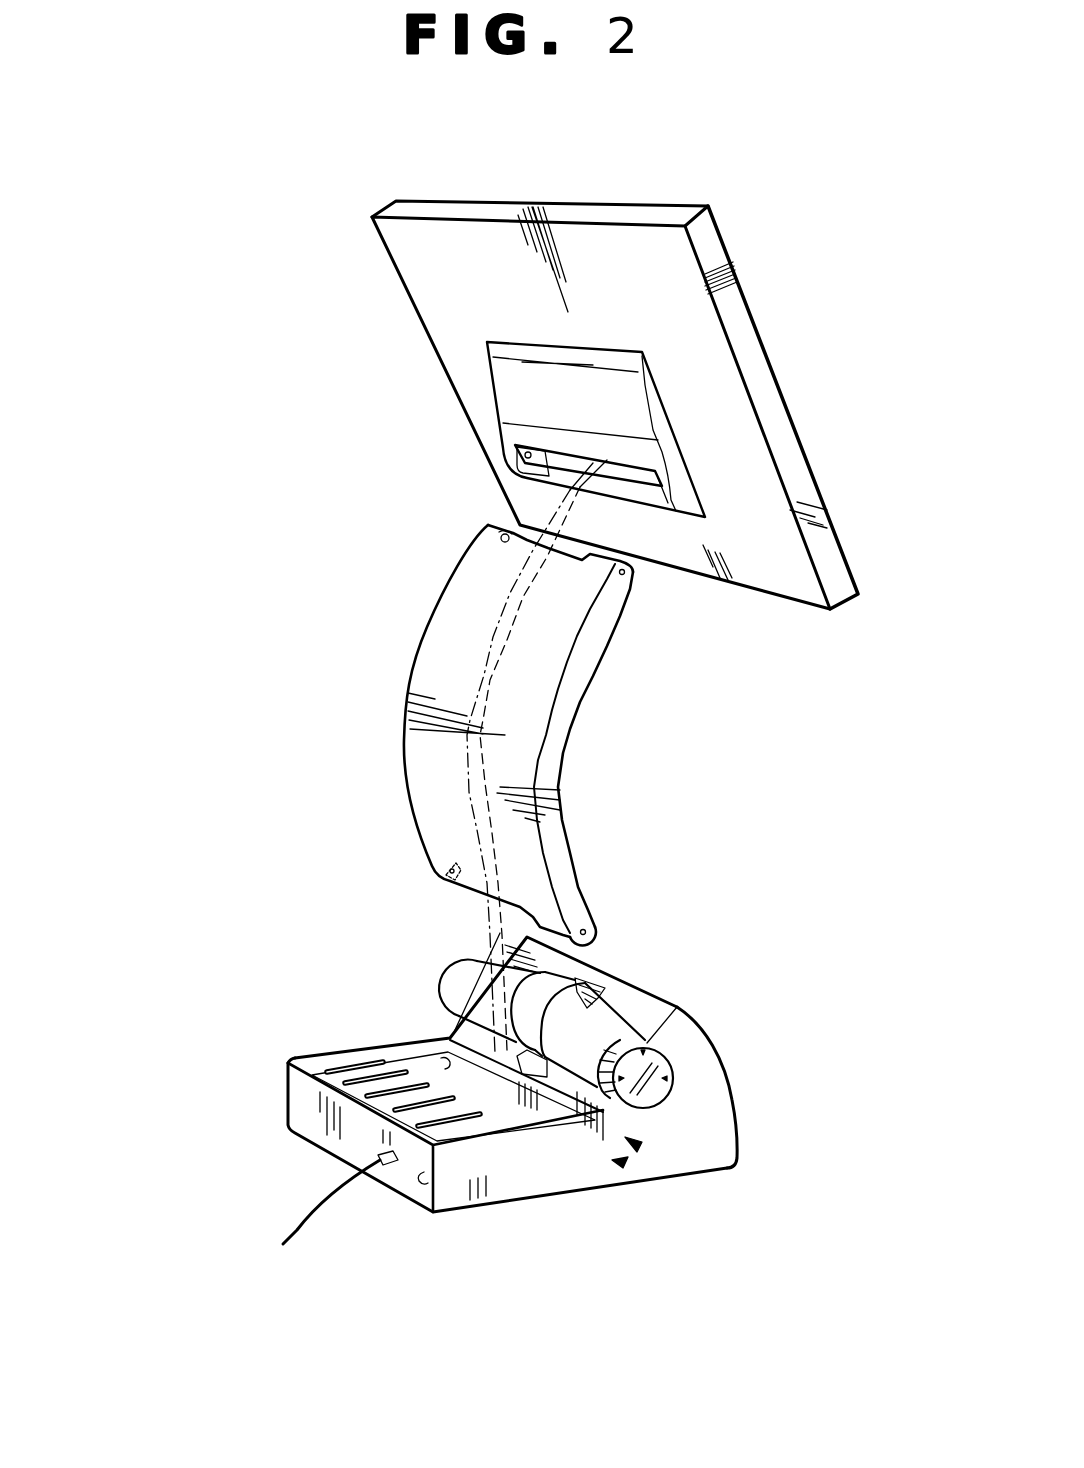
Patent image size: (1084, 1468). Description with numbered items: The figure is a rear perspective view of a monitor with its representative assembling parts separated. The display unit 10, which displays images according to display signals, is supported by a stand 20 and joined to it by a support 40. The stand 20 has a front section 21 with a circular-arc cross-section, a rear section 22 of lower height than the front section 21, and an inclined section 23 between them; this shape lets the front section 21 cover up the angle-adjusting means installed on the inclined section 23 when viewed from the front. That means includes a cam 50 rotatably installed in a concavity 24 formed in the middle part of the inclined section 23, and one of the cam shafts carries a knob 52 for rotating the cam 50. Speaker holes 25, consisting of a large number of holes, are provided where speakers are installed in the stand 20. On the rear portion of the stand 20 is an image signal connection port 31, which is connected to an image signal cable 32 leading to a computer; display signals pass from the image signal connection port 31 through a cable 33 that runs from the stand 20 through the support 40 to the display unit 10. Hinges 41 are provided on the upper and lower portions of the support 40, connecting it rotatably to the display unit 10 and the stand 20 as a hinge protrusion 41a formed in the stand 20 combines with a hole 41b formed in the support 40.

The display unit 10 is at (760, 385).
The stand 20 is at (287, 1101).
The front section 21 is at (723, 1067).
The rear section 22 is at (457, 1187).
The inclined section 23 is at (645, 1007).
The concavity 24 is at (600, 973).
The speaker holes 25 is at (627, 1163).
The image signal connection port 31 is at (417, 1176).
The image signal cable 32 is at (318, 1215).
The cable 33 is at (483, 672).
The support 40 is at (406, 761).
The hinge 41 is at (328, 496).
The hinge protrusion 41a is at (514, 496).
The hole 41b is at (503, 528).
The cam 50 is at (553, 987).
The knob 52 is at (652, 1093).